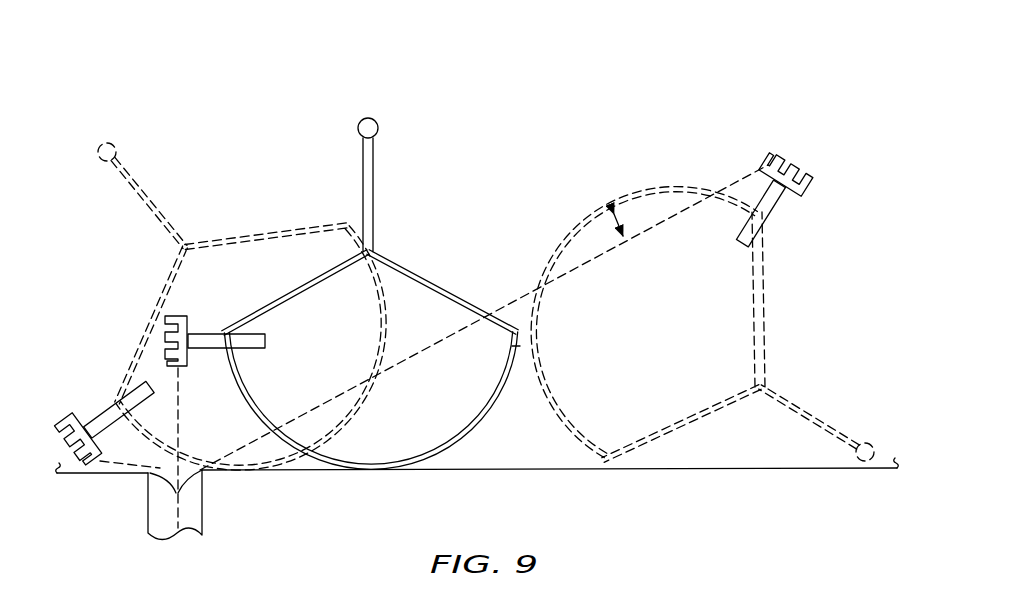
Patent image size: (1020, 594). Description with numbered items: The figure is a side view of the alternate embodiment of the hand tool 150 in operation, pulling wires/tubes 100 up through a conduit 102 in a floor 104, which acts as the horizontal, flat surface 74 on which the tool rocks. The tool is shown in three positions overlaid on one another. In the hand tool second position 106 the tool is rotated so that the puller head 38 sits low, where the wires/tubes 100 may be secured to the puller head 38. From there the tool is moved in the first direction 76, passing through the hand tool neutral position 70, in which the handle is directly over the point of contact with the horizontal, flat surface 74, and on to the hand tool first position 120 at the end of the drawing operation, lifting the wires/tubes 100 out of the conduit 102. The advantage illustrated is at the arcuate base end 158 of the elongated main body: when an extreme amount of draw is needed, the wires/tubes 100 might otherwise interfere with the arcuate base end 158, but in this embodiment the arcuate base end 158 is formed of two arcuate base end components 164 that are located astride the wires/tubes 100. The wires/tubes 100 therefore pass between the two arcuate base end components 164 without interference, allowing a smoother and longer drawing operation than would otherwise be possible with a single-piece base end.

The puller head 38 is at (466, 281).
The hand tool neutral position 70 is at (398, 285).
The horizontal, flat surface 74 is at (477, 453).
The first direction 76 is at (423, 103).
The wires/tubes 100 is at (176, 520).
The conduit 102 is at (148, 496).
The floor 104 is at (710, 468).
The hand tool second position 106 is at (138, 130).
The hand tool first position 120 is at (802, 135).
The hand tool 150 is at (545, 137).
The arcuate base end 158 is at (399, 362).
The arcuate base end components 164 is at (362, 407).